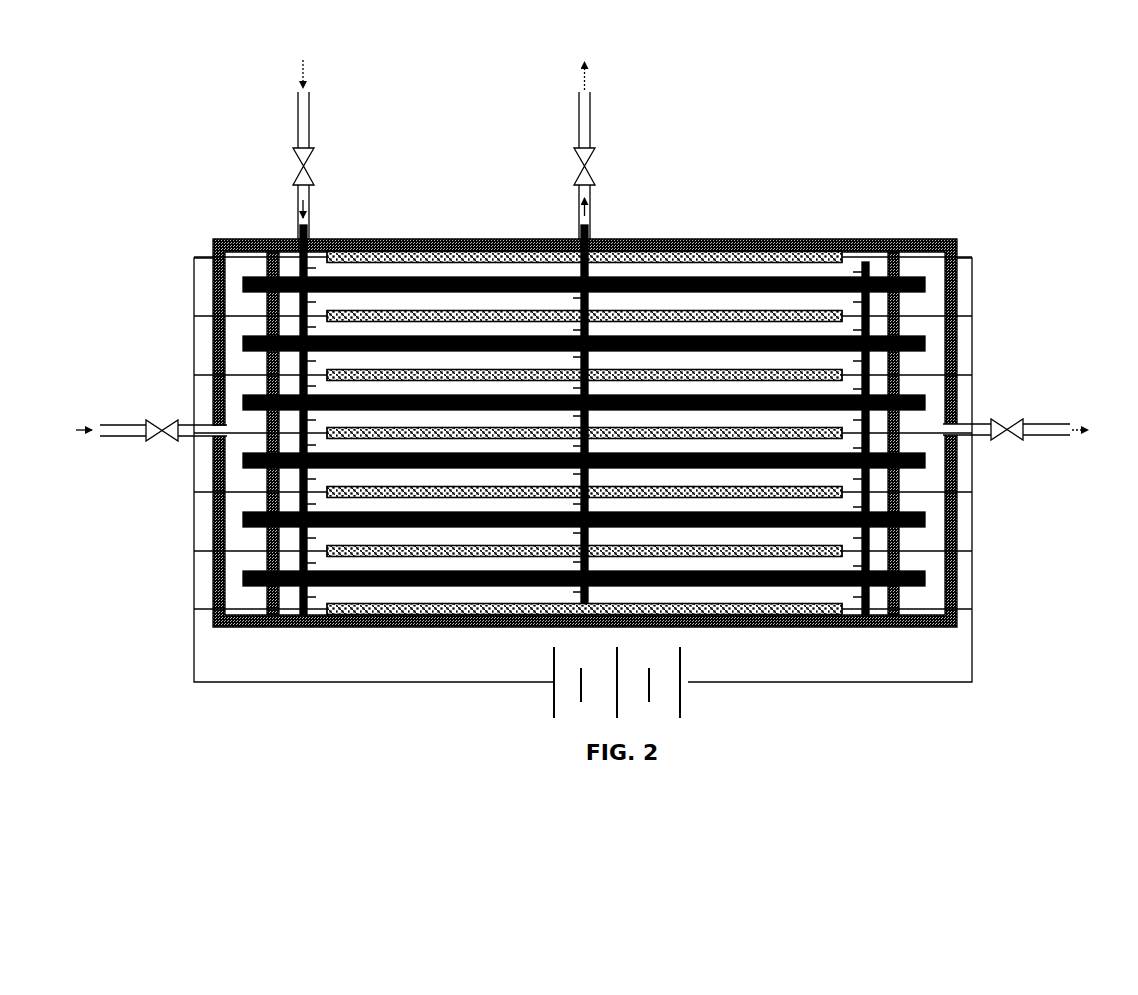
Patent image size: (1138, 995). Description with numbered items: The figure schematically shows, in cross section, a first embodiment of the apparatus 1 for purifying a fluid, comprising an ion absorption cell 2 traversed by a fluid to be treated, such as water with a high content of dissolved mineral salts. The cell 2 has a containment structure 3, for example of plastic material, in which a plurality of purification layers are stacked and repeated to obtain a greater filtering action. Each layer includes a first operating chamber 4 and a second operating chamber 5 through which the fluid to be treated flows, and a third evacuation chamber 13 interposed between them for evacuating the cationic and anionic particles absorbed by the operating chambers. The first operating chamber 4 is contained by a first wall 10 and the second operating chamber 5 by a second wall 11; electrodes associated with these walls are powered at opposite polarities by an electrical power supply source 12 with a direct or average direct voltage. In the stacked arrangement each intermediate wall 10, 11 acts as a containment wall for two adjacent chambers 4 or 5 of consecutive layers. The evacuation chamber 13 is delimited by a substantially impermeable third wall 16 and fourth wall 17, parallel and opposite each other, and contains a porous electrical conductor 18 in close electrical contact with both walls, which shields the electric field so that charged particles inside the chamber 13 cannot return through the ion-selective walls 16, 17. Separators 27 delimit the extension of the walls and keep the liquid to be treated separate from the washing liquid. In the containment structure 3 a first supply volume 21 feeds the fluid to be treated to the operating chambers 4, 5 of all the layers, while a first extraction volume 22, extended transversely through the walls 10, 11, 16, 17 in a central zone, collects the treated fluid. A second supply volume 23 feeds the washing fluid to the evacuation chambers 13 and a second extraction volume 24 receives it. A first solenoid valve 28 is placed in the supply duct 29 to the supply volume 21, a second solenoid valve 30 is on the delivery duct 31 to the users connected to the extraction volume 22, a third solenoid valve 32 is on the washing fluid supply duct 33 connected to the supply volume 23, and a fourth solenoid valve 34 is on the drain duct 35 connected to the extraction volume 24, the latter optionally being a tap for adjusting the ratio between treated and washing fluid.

The apparatus for purifying a fluid 1 is at (156, 130).
The ion absorption cell 2 is at (958, 148).
The containment structure 3 is at (212, 626).
The first operating chamber 4 is at (638, 303).
The second operating chamber 5 is at (665, 340).
The first wall 10 is at (556, 480).
The second wall 11 is at (530, 490).
The electrical power supply source 12 is at (538, 691).
The third evacuation chamber 13 is at (240, 402).
The third wall 16 is at (435, 320).
The fourth wall 17 is at (392, 305).
The porous electrical conductor 18 is at (867, 242).
The first supply volume 21 is at (290, 262).
The first extraction volume 22 is at (600, 262).
The second supply volume 23 is at (230, 449).
The second extraction volume 24 is at (937, 414).
The separators 27 is at (287, 240).
The first solenoid valve 28 is at (309, 163).
The supply duct 29 is at (318, 186).
The second solenoid valve 30 is at (578, 150).
The delivery duct 31 is at (593, 190).
The third solenoid valve 32 is at (170, 423).
The supply duct of the washing fluid 33 is at (123, 438).
The fourth solenoid valve 34 is at (1003, 441).
The drain duct 35 is at (1043, 422).